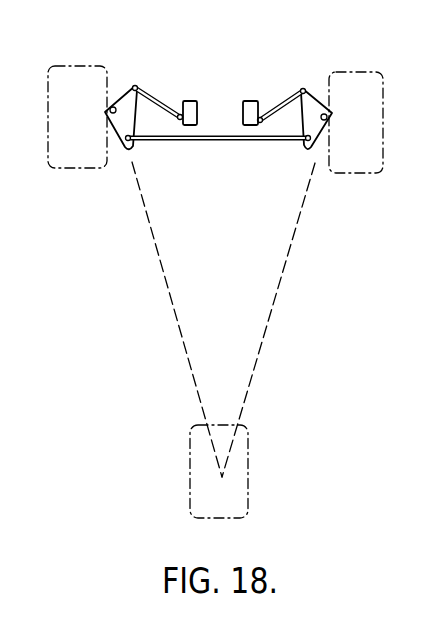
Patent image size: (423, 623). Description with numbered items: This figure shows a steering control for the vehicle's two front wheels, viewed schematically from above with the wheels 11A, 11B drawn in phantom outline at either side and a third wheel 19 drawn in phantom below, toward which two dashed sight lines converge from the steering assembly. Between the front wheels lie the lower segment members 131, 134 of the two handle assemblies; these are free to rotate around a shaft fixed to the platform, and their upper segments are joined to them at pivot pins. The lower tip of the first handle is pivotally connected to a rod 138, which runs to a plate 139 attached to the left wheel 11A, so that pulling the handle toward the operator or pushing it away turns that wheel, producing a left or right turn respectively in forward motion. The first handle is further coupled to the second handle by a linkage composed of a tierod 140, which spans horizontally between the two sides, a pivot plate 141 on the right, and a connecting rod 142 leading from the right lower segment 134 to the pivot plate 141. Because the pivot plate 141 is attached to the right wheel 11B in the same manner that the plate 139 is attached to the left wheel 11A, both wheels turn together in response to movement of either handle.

The left wheel 11A is at (83, 65).
The right wheel 11B is at (357, 70).
The rear wheel 19 is at (248, 487).
The lower segment member 131 is at (190, 100).
The lower segment member 134 is at (250, 100).
The rod 138 is at (157, 101).
The plate 139 is at (135, 86).
The tierod 140 is at (232, 143).
The pivot plate 141 is at (317, 97).
The connecting rod 142 is at (273, 109).